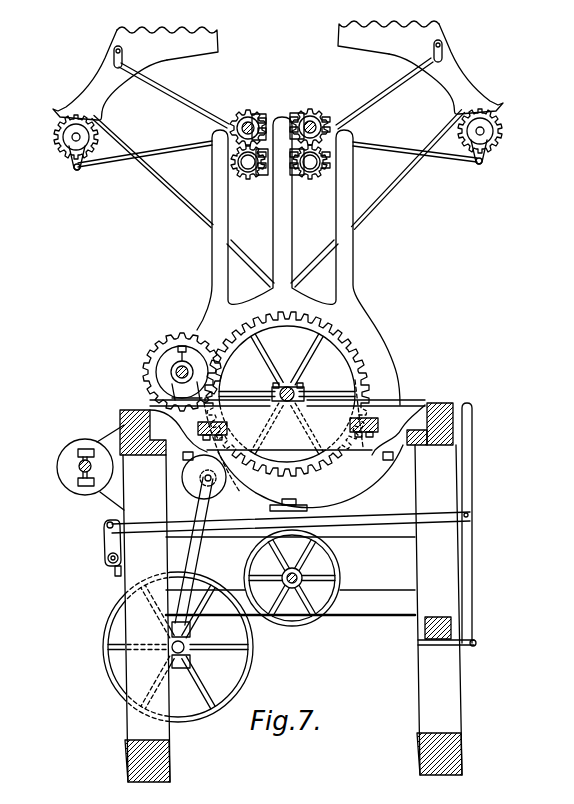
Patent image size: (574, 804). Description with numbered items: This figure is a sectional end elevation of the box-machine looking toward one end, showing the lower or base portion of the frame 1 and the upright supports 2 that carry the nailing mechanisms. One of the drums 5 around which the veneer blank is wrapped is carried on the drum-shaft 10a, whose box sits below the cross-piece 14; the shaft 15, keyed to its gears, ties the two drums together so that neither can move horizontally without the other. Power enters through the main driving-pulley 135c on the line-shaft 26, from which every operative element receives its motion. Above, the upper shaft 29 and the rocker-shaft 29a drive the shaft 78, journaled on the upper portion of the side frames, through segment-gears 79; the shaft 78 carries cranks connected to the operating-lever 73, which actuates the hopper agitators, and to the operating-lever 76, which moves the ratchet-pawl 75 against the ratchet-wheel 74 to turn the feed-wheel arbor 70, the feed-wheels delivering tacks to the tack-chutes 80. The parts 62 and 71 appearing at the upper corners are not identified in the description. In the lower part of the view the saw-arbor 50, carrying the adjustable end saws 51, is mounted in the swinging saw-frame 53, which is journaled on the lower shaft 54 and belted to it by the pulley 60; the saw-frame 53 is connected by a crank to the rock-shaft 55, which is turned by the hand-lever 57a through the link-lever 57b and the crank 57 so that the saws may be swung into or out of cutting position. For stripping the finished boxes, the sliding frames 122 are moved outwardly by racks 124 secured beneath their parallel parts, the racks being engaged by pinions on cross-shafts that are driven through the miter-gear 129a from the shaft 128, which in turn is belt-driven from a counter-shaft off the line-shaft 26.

The base portion of the frame 1 is at (457, 402).
The upright supports 2 is at (380, 476).
The drum 5 is at (348, 345).
The drum-shaft 10a is at (294, 388).
The cross-piece 14 is at (202, 345).
The shaft 15 is at (178, 366).
The line-shaft 26 is at (330, 578).
The upper shaft 29 is at (244, 116).
The rocker-shaft 29a is at (309, 118).
The saw-arbor 50 is at (199, 478).
The end saw 51 is at (195, 487).
The swinging saw-frame 53 is at (195, 557).
The lower shaft 54 is at (191, 652).
The rock-shaft 55 is at (107, 561).
The crank 57 is at (107, 543).
The hand-lever 57a is at (483, 523).
The link-lever 57b is at (371, 520).
The pulley 60 is at (252, 677).
The toothed arm head 62 is at (278, 40).
The feed-wheel arbor 70 is at (56, 136).
The arm 71 is at (104, 70).
The operating-lever 73 is at (114, 51).
The ratchet-wheel 74 is at (64, 149).
The ratchet-pawl 75 is at (75, 170).
The operating-lever 76 is at (186, 157).
The shaft 78 is at (261, 177).
The segment-gears 79 is at (237, 121).
The tack-chute 80 is at (237, 170).
The sliding frame 122 is at (418, 393).
The rack 124 is at (231, 466).
The shaft 128 is at (79, 484).
The miter-gear 129a is at (62, 470).
The main driving-pulley 135c is at (337, 562).